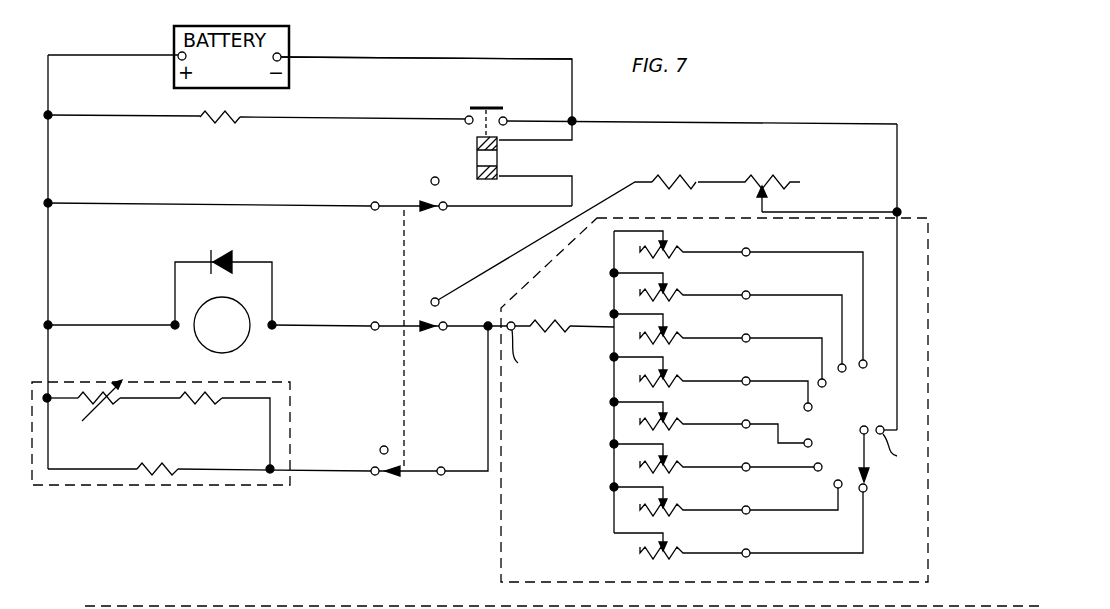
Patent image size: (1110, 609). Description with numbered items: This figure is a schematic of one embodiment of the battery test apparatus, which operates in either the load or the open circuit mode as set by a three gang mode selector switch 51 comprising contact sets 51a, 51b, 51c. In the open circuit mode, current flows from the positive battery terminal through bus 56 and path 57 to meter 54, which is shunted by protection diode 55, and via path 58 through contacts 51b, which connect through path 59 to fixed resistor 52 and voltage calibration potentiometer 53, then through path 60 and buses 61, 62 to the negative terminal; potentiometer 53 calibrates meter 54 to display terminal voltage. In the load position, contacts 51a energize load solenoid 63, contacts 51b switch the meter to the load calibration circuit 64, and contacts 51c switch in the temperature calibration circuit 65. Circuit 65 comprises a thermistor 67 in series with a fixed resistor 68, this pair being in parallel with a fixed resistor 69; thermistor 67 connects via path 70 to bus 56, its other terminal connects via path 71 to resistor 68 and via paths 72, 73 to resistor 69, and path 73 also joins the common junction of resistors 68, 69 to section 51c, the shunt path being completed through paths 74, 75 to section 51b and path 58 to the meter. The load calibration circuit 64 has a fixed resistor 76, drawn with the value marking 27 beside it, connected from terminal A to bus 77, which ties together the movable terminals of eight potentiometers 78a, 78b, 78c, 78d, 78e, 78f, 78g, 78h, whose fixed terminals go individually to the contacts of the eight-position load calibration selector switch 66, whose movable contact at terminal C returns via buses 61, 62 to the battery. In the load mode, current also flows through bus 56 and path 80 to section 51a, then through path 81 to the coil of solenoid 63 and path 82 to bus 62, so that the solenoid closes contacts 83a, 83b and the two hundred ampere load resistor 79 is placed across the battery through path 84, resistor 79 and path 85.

The resistor 27 is at (538, 338).
The mode selector switch 51 is at (371, 277).
The contacts 51a is at (421, 180).
The contacts 51b is at (376, 345).
The contacts 51c is at (415, 484).
The fixed resistor 52 is at (676, 179).
The voltage calibration potentiometer 53 is at (768, 180).
The meter 54 is at (252, 334).
The protection diode 55 is at (226, 253).
The bus 56 is at (48, 245).
The path 57 is at (107, 323).
The path 58 is at (335, 325).
The path 59 is at (534, 247).
The path 60 is at (828, 212).
The bus 61 is at (896, 164).
The bus 62 is at (460, 57).
The load solenoid 63 is at (468, 152).
The load calibration circuit 64 is at (500, 521).
The temperature calibration circuit 65 is at (88, 489).
The load calibration selector switch 66 is at (895, 490).
The thermistor 67 is at (101, 379).
The fixed resistor 68 is at (221, 396).
The fixed resistor 69 is at (162, 476).
The path 70 is at (64, 402).
The path 71 is at (149, 396).
The path 72 is at (278, 415).
The path 73 is at (250, 472).
The path 74 is at (488, 384).
The path 75 is at (465, 325).
The fixed resistor 76 is at (556, 335).
The bus 77 is at (613, 425).
The potentiometer 78a is at (686, 255).
The potentiometer 78b is at (686, 298).
The potentiometer 78c is at (686, 341).
The potentiometer 78d is at (686, 384).
The potentiometer 78e is at (686, 427).
The potentiometer 78f is at (686, 470).
The potentiometer 78g is at (686, 513).
The potentiometer 78h is at (640, 553).
The load resistor 79 is at (242, 116).
The path 80 is at (259, 204).
The path 81 is at (480, 208).
The path 82 is at (573, 142).
The fixed contact 83a is at (464, 115).
The fixed contact 83b is at (506, 115).
The path 84 is at (131, 116).
The path 85 is at (380, 116).